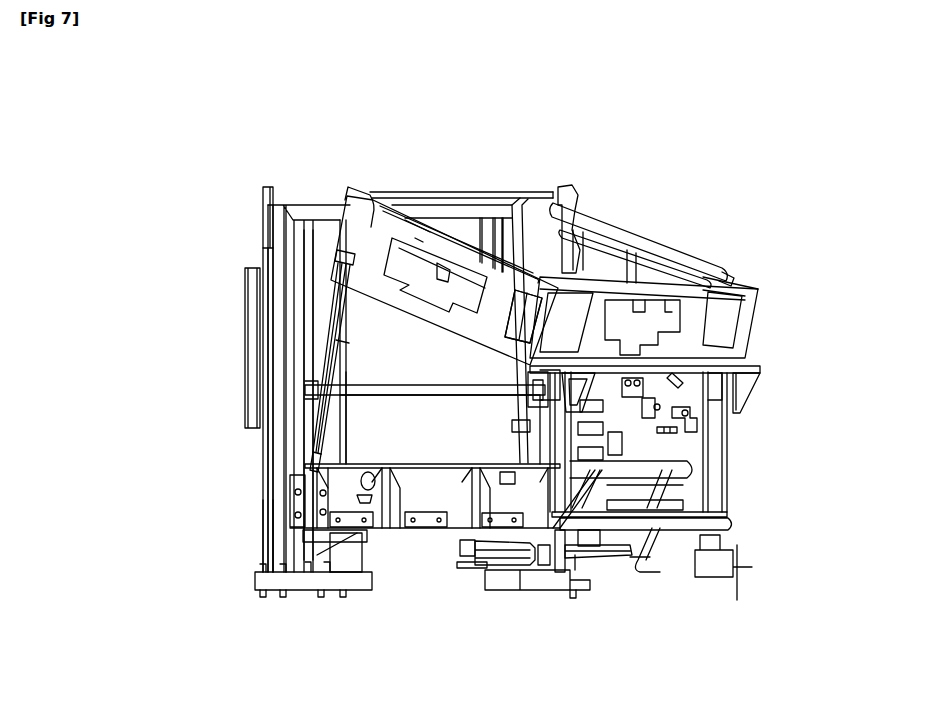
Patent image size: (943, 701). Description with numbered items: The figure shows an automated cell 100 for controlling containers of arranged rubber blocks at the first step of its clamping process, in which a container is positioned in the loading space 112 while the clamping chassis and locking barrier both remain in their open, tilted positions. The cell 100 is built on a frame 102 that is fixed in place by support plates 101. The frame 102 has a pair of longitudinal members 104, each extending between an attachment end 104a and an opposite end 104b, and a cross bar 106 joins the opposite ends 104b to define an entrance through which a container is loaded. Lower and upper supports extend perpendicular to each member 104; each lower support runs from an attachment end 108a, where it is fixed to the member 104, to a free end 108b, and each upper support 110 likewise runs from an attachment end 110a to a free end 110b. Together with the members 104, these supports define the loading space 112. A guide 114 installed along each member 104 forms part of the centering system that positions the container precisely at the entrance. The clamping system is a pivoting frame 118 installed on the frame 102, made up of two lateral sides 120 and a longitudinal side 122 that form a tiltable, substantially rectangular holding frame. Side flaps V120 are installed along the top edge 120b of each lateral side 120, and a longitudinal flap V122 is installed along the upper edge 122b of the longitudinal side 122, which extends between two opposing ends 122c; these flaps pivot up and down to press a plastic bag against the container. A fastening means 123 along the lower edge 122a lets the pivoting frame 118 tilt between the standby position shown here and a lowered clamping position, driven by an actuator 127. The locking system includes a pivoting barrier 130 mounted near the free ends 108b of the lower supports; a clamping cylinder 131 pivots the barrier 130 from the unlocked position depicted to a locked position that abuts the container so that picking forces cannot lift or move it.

The automated cell 100 is at (534, 158).
The support plate 101 is at (290, 590).
The frame 102 is at (272, 190).
The longitudinal member 104 is at (276, 250).
The attachment end 104a is at (266, 558).
The opposite end 104b is at (264, 228).
The cross bar 106 is at (322, 210).
The attachment end of lower support 108a is at (295, 522).
The free end of lower support 108b is at (565, 560).
The upper support 110 is at (405, 395).
The attachment end of upper support 110a is at (305, 393).
The free end of upper support 110b is at (530, 392).
The loading space 112 is at (316, 320).
The guide 114 is at (250, 318).
The pivoting frame 118 is at (385, 232).
The lateral side 120 is at (398, 287).
The top edge 120b is at (423, 237).
The side flap V120 is at (622, 240).
The longitudinal side 122 is at (700, 338).
The lower edge 122a is at (662, 370).
The upper edge 122b is at (738, 292).
The opposing end 122c is at (755, 322).
The longitudinal flap V122 is at (665, 292).
The fastening means 123 is at (742, 380).
The actuator 127 is at (318, 430).
The pivoting barrier 130 is at (645, 555).
The clamping cylinder 131 is at (495, 560).